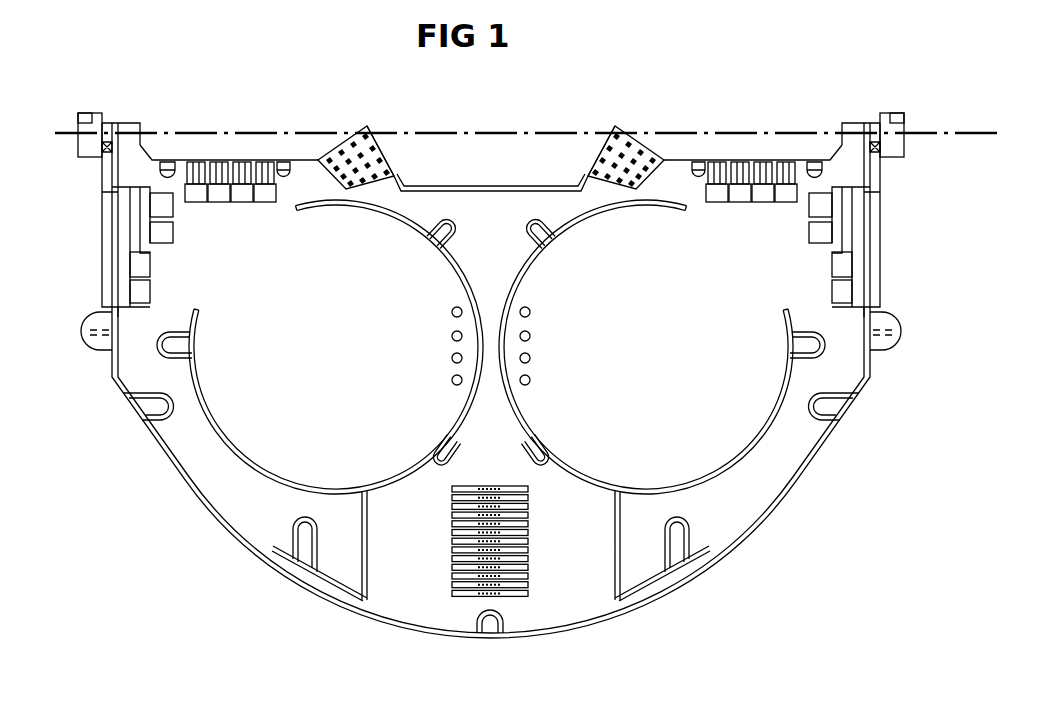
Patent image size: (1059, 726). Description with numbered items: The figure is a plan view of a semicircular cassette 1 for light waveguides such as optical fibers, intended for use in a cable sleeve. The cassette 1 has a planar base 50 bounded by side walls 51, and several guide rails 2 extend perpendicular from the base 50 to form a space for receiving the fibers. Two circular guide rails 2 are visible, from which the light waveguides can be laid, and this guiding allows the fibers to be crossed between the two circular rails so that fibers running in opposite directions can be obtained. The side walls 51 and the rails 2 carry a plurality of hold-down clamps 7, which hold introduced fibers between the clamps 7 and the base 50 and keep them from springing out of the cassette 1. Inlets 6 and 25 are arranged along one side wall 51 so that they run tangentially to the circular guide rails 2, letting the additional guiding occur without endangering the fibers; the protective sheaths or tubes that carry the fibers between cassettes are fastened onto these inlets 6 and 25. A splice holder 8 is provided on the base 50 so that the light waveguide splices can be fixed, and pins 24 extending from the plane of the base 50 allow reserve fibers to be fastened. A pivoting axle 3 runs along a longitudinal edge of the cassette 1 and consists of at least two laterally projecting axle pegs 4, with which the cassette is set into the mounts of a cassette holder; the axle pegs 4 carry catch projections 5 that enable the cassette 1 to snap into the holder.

The cassette 1 is at (748, 547).
The guide rails 2 is at (530, 264).
The pivoting axle 3 is at (565, 133).
The axle pegs 4 is at (882, 117).
The catch projections 5 is at (894, 112).
The inlets 6 is at (365, 128).
The hold-down clamps 7 is at (150, 424).
The splice holder 8 is at (530, 556).
The pins 24 is at (462, 357).
The inlets 25 is at (196, 160).
The planar base 50 is at (360, 353).
The side walls 51 is at (473, 194).